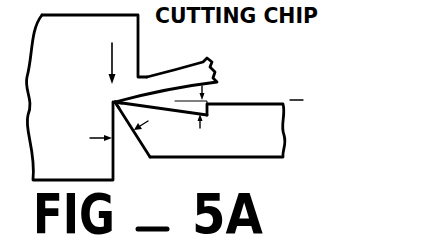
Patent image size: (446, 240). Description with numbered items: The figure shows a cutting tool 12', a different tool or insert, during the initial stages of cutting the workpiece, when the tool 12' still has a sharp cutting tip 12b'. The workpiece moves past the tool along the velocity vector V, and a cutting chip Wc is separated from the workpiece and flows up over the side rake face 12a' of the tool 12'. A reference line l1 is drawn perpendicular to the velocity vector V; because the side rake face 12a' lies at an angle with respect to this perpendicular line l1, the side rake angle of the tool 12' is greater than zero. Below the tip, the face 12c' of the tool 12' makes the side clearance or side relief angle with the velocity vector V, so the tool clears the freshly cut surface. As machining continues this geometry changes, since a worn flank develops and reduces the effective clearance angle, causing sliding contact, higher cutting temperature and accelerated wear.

The cutting tool 12' is at (172, 144).
The side rake face 12a' is at (161, 127).
The sharp cutting tip 12b' is at (91, 108).
The side clearance face 12c' is at (146, 147).
The velocity vector V is at (109, 50).
The cutting chip Wc is at (204, 60).
The perpendicular line l1 is at (307, 104).